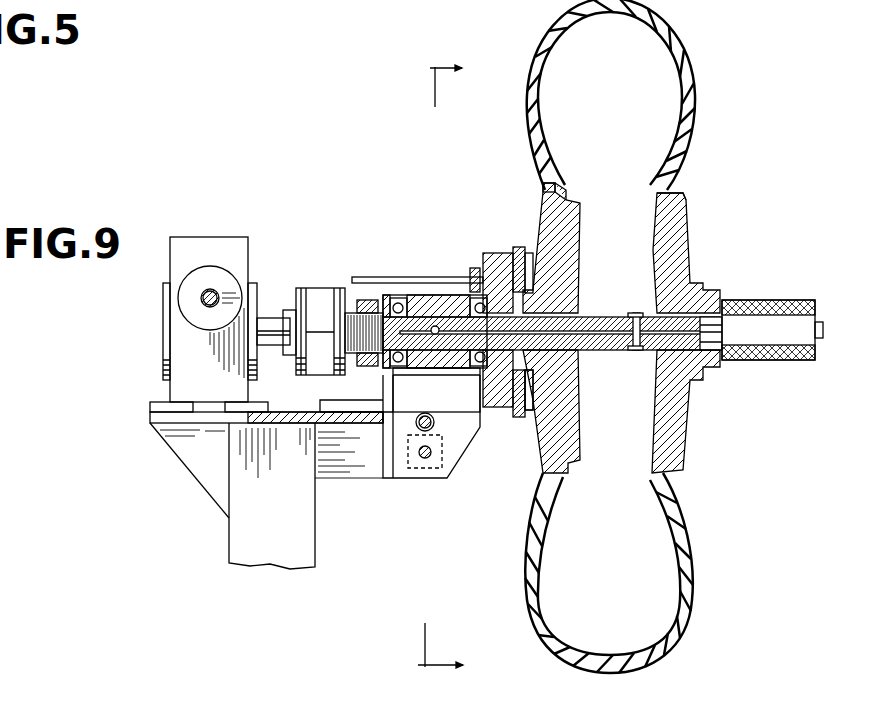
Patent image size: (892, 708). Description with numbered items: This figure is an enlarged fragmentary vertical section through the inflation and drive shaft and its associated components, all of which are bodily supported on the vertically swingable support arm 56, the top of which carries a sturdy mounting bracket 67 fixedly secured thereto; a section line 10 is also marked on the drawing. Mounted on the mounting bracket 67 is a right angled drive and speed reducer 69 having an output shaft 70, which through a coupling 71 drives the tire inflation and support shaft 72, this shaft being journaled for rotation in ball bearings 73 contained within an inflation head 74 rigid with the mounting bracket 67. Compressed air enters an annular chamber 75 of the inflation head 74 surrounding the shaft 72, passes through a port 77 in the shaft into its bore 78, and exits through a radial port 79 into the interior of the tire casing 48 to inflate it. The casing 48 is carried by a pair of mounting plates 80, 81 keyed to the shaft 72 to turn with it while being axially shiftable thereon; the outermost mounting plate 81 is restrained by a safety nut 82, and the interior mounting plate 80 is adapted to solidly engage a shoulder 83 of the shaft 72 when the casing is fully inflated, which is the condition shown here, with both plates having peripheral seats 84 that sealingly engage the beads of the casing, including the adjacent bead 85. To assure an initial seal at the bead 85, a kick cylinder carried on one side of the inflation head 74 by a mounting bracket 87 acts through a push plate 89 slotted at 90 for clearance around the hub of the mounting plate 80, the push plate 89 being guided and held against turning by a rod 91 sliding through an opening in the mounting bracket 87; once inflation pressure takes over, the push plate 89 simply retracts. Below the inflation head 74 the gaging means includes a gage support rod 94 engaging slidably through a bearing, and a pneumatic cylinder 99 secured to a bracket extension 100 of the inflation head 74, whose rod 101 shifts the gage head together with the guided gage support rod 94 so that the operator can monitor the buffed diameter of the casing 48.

The section line 10 is at (445, 353).
The tire casing 48 is at (667, 25).
The vertically swingable support arm 56 is at (295, 522).
The mounting bracket 67 is at (285, 420).
The right angled drive and speed reducer 69 is at (206, 238).
The output shaft 70 is at (266, 327).
The coupling 71 is at (314, 298).
The tire inflation and support shaft 72 is at (435, 327).
The ball bearings 73 is at (395, 297).
The inflation head 74 is at (453, 296).
The annular chamber 75 is at (420, 297).
The port 77 is at (427, 420).
The bore 78 is at (587, 352).
The radial port 79 is at (633, 307).
The mounting plate 80 is at (555, 228).
The mounting plate 81 is at (677, 242).
The safety nut 82 is at (773, 345).
The shoulder 83 is at (523, 352).
The peripheral seats 84 is at (545, 193).
The bead 85 is at (563, 183).
The mounting bracket 87 is at (476, 268).
The push plate 89 is at (523, 253).
The slot 90 is at (523, 275).
The rod 91 is at (360, 276).
The gage support rod 94 is at (417, 422).
The pneumatic cylinder 99 is at (445, 457).
The bracket extension 100 is at (400, 468).
The rod 101 is at (425, 458).